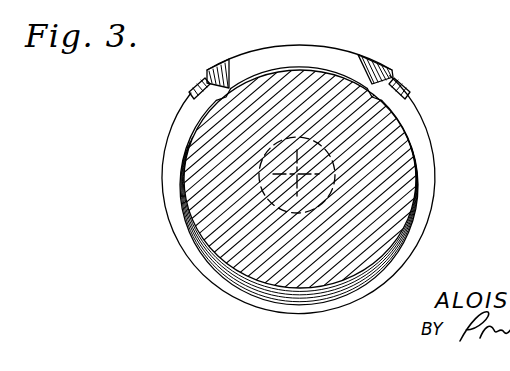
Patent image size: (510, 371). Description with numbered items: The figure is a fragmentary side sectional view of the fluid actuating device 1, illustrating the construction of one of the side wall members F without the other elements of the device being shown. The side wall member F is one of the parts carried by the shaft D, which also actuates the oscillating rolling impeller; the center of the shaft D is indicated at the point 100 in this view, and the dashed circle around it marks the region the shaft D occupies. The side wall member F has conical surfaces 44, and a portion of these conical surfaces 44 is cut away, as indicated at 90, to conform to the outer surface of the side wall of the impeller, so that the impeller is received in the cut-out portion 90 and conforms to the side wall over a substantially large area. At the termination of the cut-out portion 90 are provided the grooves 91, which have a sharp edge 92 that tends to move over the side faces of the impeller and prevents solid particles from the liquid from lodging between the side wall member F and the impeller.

The lens assembly 1 is at (152, 172).
The conical surfaces 44 is at (428, 172).
The cut-out portion 90 is at (357, 63).
The grooves 91 is at (212, 86).
The sharp edge 92 is at (213, 79).
The center point 100 is at (297, 174).
The shaft D is at (331, 147).
The side wall members F is at (164, 208).